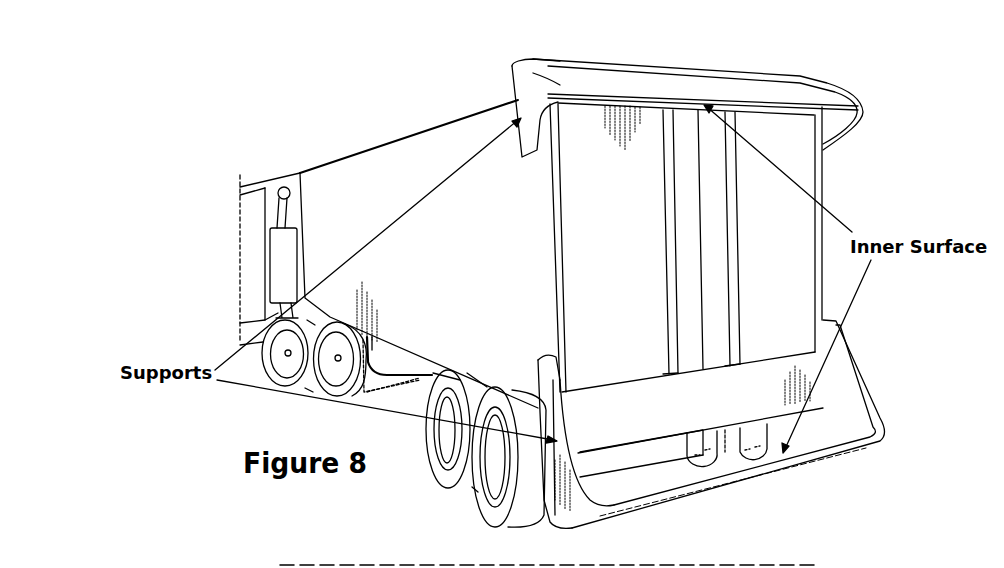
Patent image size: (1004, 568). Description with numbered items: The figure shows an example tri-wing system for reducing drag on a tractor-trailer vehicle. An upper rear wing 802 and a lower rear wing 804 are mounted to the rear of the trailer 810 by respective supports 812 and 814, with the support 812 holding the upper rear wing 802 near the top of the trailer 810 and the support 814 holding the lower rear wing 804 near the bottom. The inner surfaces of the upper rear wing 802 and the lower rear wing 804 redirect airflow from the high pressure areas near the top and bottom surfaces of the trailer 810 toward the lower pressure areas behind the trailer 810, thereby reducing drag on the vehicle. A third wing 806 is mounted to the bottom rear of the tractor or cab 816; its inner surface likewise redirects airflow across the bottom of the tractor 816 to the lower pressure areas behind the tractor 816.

The upper rear wing 802 is at (858, 132).
The lower rear wing 804 is at (886, 397).
The wing 806 is at (395, 370).
The trailer 810 is at (378, 133).
The support 812 is at (520, 104).
The support 814 is at (548, 430).
The tractor 816 is at (277, 168).